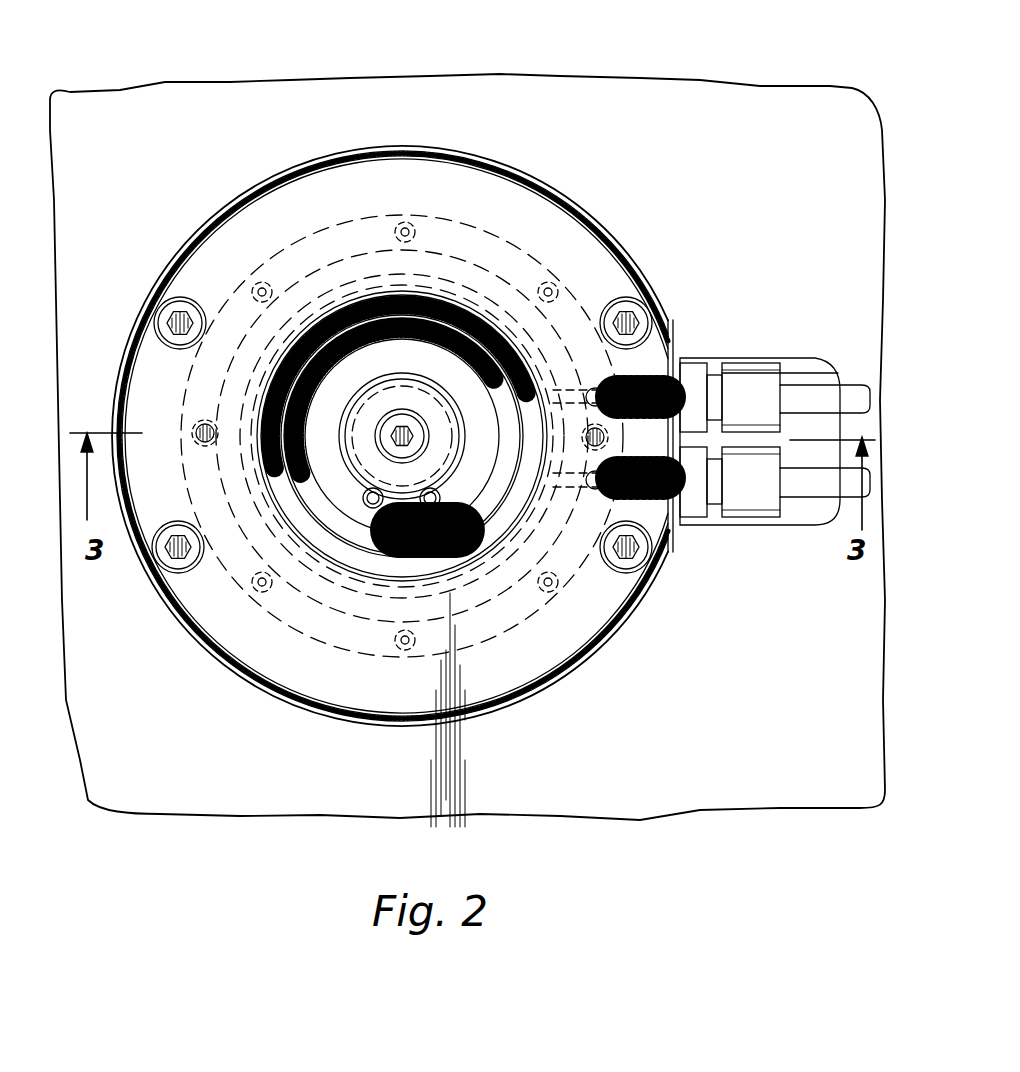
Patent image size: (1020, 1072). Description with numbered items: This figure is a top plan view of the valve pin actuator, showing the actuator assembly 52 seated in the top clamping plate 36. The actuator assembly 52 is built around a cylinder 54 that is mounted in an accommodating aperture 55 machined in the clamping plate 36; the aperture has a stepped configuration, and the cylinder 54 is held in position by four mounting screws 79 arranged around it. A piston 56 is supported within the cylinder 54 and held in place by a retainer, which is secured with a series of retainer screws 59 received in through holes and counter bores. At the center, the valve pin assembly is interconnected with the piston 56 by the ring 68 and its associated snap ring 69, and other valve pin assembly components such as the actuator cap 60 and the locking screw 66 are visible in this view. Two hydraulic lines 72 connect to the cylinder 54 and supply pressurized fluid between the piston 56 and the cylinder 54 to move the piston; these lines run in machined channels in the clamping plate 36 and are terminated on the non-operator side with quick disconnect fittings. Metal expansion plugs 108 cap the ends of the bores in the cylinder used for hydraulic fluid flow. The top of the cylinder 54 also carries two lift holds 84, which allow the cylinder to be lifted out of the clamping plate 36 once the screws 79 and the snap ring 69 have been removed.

The clamping plate 36 is at (548, 100).
The actuator assembly 52 is at (448, 148).
The cylinder 54 is at (347, 190).
The aperture 55 is at (318, 158).
The piston 56 is at (410, 428).
The retainer screws 59 is at (558, 592).
The actuator cap 60 is at (367, 416).
The locking screw 66 is at (447, 358).
The ring 68 is at (437, 322).
The snap ring 69 is at (450, 398).
The hydraulic lines 72 is at (745, 390).
The mounting screws 79 is at (158, 322).
The lift holds 84 is at (197, 432).
The metal expansion plugs 108 is at (612, 503).